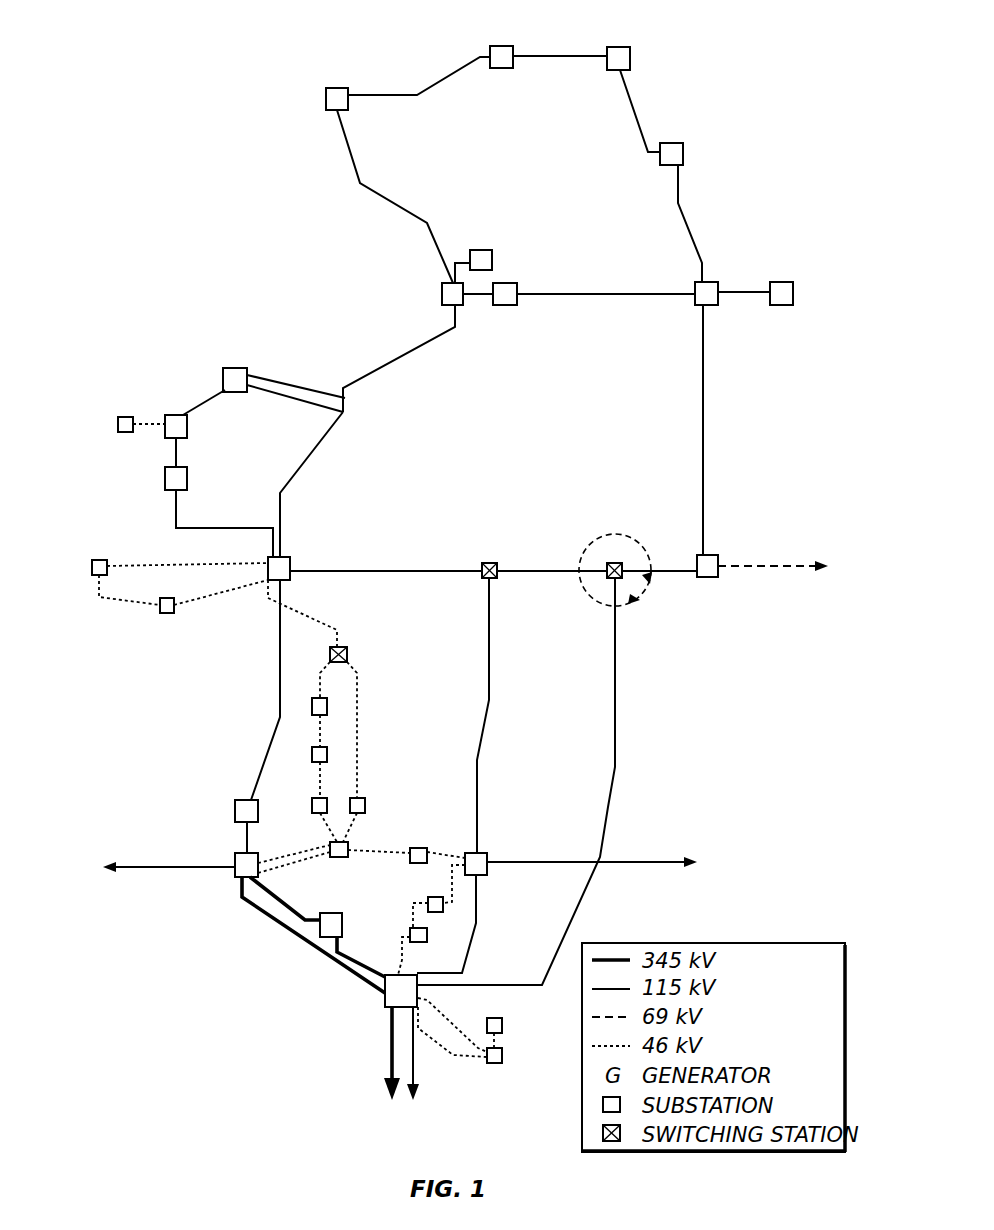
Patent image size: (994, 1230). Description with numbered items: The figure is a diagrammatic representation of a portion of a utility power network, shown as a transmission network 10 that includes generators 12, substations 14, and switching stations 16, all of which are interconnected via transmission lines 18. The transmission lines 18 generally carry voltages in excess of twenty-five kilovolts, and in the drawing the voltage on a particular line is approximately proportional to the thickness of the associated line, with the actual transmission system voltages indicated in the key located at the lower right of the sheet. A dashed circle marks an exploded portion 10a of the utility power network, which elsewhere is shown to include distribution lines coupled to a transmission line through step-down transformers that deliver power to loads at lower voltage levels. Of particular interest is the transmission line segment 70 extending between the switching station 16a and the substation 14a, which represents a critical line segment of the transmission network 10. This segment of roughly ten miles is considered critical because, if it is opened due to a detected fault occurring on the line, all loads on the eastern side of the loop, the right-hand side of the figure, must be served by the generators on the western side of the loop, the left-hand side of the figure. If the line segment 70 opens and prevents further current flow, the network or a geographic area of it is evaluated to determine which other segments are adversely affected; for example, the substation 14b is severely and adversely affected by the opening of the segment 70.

The transmission network 10 is at (450, 561).
The exploded portion 10a is at (586, 561).
The generators 12 is at (345, 531).
The substations 14 is at (400, 554).
The substation 14a is at (736, 581).
The substation 14b is at (768, 310).
The switching stations 16 is at (435, 612).
The switching station 16a is at (646, 549).
The transmission lines 18 is at (463, 578).
The transmission line segment 70 is at (667, 589).